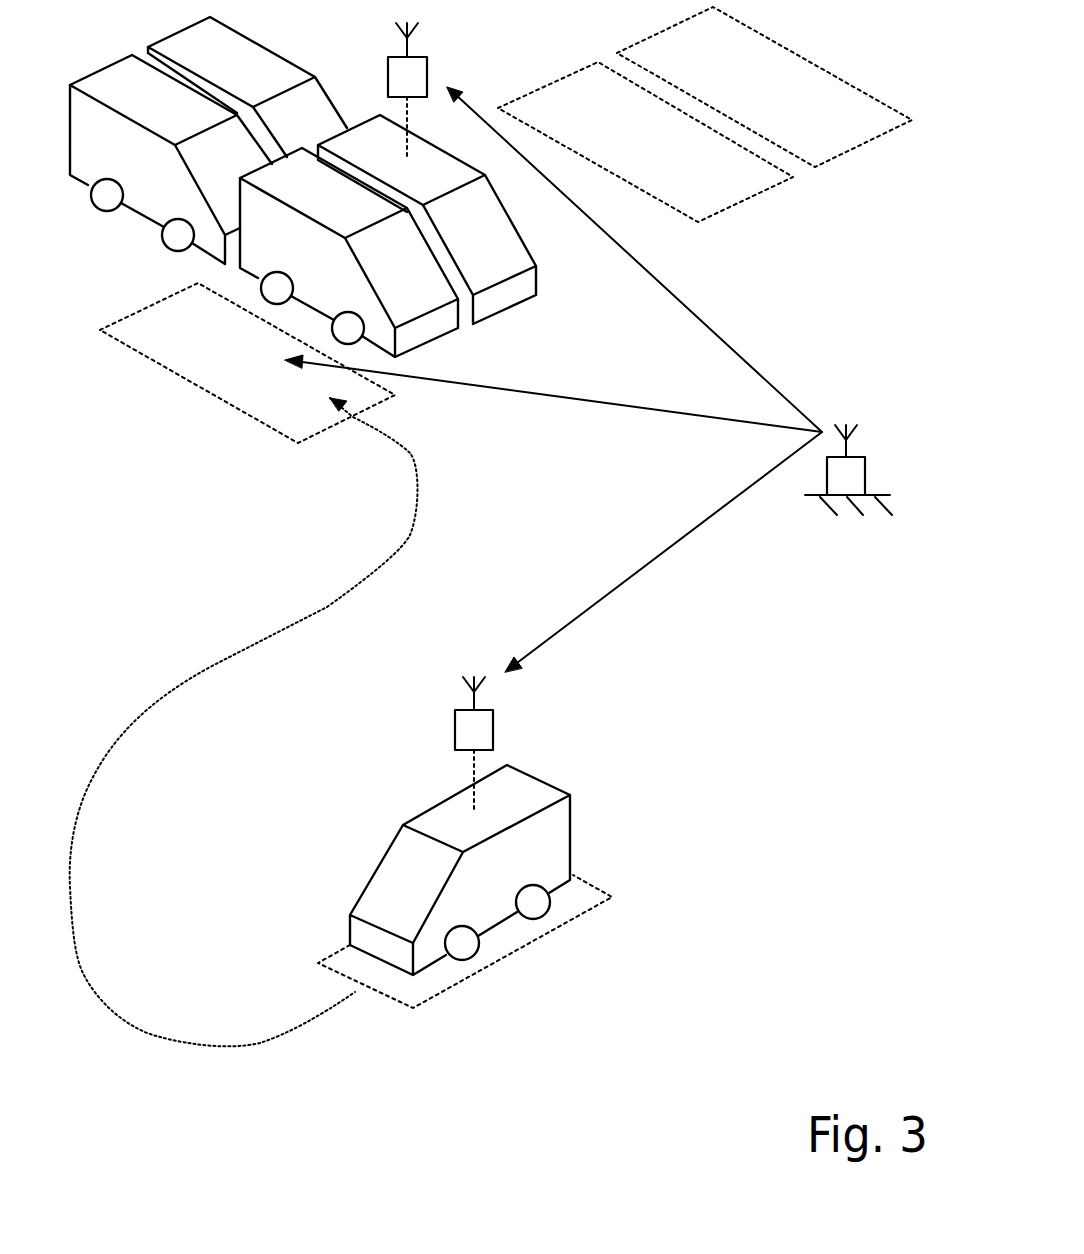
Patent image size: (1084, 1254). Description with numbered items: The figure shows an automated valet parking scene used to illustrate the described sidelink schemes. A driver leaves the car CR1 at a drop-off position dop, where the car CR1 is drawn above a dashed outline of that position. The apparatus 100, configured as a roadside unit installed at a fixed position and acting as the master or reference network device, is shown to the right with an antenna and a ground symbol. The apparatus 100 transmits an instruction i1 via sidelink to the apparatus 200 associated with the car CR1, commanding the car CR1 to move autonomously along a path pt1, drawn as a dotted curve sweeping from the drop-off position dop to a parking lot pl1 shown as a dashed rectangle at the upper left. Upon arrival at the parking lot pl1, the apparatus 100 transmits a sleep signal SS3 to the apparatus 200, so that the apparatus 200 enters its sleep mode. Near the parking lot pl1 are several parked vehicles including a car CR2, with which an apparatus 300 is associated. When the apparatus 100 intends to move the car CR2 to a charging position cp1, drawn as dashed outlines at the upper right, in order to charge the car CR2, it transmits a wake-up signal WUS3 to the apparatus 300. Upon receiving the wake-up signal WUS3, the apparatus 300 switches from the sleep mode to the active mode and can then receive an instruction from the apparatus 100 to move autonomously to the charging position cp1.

The apparatus 100 is at (862, 473).
The apparatus 200 is at (490, 730).
The apparatus 300 is at (425, 67).
The car CR1 is at (543, 798).
The car CR2 is at (508, 293).
The parking lot pl1 is at (197, 336).
The charging position cp1 is at (718, 185).
The path pt1 is at (208, 668).
The drop-off position dop is at (600, 878).
The wake-up signal WUS3 is at (634, 259).
The sleep signal SS3 is at (553, 393).
The instruction i1 is at (663, 552).